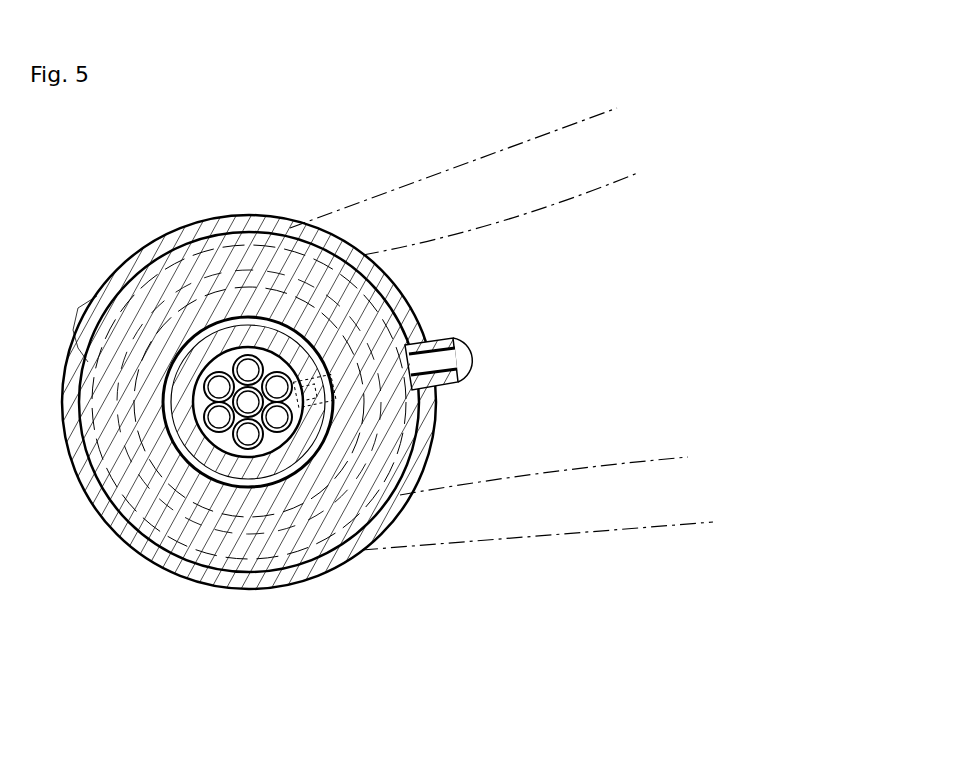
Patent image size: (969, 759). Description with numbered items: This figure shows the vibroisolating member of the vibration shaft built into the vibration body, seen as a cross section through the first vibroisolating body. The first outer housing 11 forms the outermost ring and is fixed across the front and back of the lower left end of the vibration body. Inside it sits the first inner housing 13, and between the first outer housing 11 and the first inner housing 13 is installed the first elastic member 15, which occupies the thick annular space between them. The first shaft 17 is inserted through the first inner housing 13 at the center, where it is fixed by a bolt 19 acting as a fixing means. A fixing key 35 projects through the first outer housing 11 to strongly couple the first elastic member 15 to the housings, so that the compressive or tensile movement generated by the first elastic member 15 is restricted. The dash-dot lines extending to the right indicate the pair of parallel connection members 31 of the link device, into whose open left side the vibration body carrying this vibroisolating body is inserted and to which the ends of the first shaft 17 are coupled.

The first outer housing 11 is at (322, 572).
The first inner housing 13 is at (268, 485).
The first elastic member 15 is at (108, 485).
The first shaft 17 is at (227, 443).
The bolt 19 is at (215, 421).
The connection member 31 is at (525, 537).
The fixing key 35 is at (468, 355).